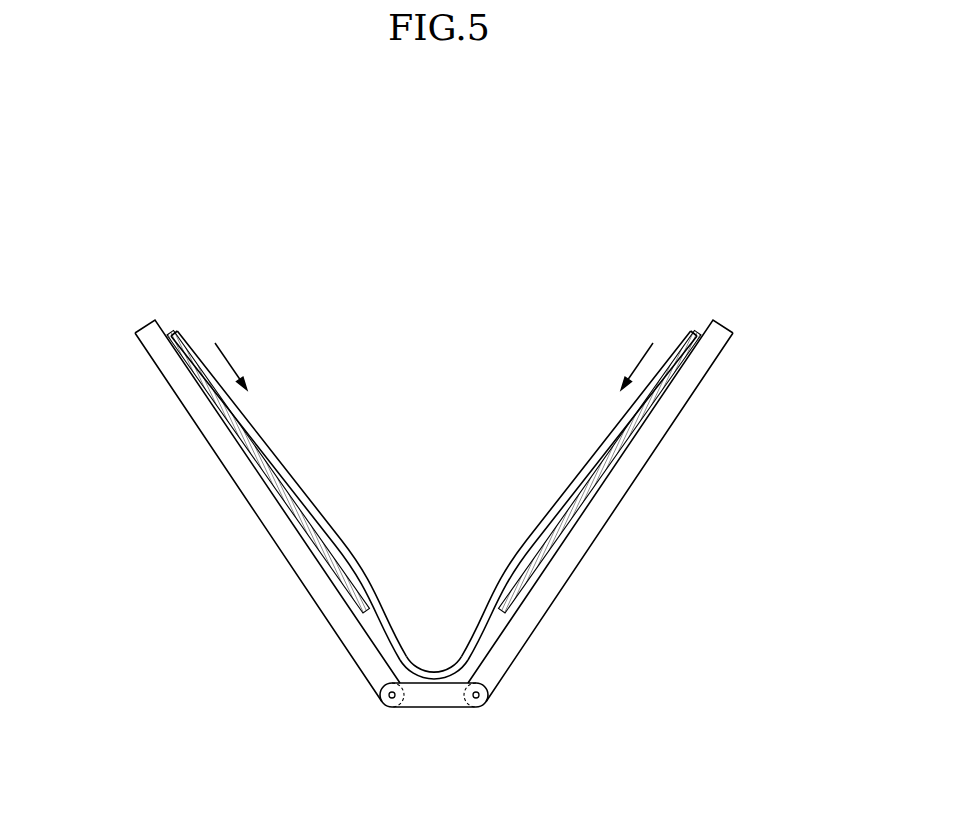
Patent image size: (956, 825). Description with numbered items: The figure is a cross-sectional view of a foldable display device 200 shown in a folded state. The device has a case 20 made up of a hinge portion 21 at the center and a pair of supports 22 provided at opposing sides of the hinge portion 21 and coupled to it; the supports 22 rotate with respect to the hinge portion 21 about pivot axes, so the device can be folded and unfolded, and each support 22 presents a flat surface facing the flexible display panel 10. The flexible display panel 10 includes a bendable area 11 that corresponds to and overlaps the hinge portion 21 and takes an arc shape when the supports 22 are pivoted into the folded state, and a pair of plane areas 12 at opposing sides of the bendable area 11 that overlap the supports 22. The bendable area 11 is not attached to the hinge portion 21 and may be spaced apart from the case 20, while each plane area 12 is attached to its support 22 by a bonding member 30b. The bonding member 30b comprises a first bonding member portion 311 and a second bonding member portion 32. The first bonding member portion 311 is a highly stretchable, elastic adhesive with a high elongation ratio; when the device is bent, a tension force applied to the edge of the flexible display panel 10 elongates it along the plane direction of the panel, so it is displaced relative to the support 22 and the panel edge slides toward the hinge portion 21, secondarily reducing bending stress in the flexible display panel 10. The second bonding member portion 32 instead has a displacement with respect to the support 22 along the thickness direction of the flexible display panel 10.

The foldable display device 200 is at (434, 409).
The flexible display panel 10 is at (590, 453).
The bendable area 11 is at (434, 678).
The plane area 12 is at (310, 523).
The case 20 is at (527, 763).
The hinge portion 21 is at (434, 697).
The support 22 is at (373, 663).
The bonding member 30b is at (160, 522).
The first bonding member portion 311 is at (188, 378).
The second bonding member portion 32 is at (245, 452).